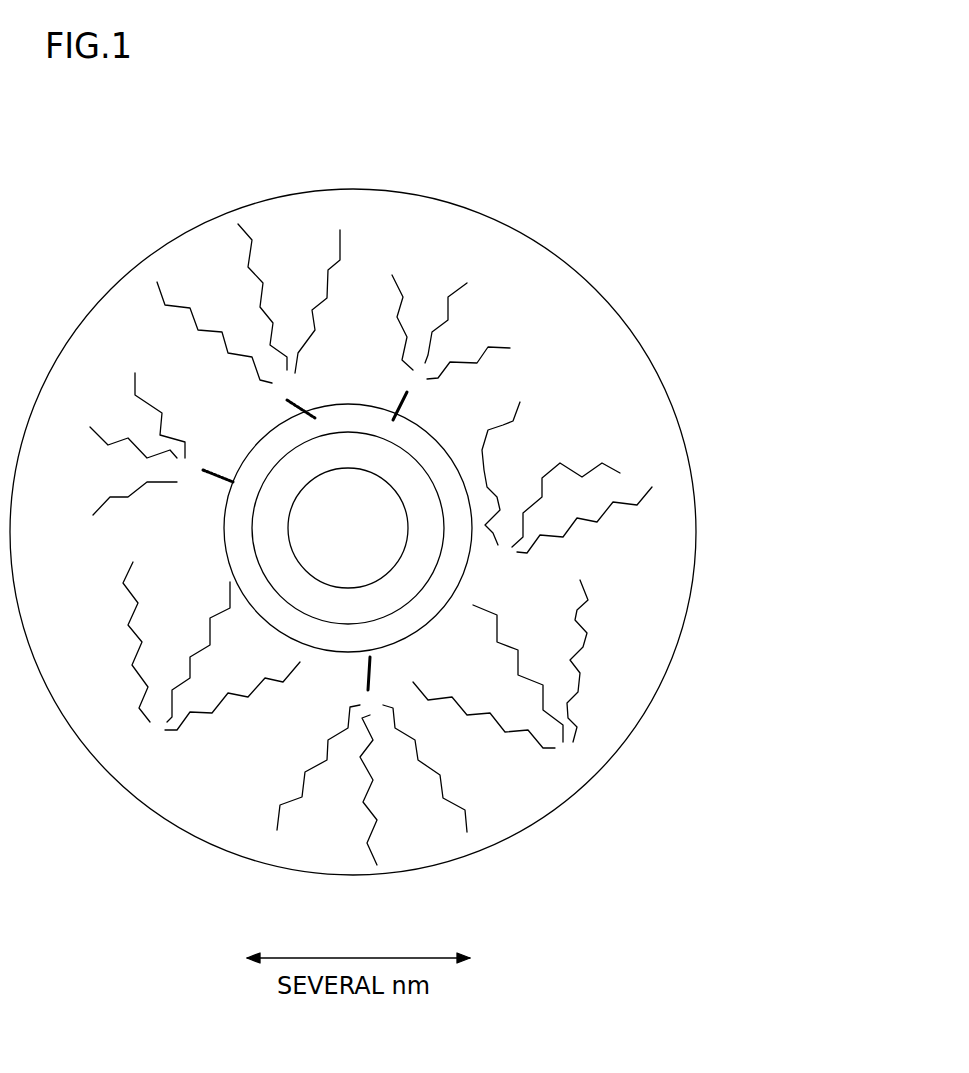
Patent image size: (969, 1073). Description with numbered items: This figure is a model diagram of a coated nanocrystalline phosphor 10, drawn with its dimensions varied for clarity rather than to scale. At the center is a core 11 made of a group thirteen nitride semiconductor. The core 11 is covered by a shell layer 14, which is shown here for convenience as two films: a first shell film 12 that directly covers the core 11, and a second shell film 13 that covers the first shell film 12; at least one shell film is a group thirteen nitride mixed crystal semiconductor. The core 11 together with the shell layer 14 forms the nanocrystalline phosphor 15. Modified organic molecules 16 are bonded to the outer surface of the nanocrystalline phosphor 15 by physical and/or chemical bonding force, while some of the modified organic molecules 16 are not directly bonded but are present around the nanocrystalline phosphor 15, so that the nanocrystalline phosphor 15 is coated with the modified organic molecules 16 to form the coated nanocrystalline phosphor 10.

The coated nanocrystalline phosphor 10 is at (641, 799).
The core 11 is at (387, 542).
The first shell film 12 is at (428, 507).
The second shell film 13 is at (426, 443).
The shell layer 14 is at (513, 433).
The nanocrystalline phosphor 15 is at (541, 433).
The modified organic molecules 16 is at (283, 280).